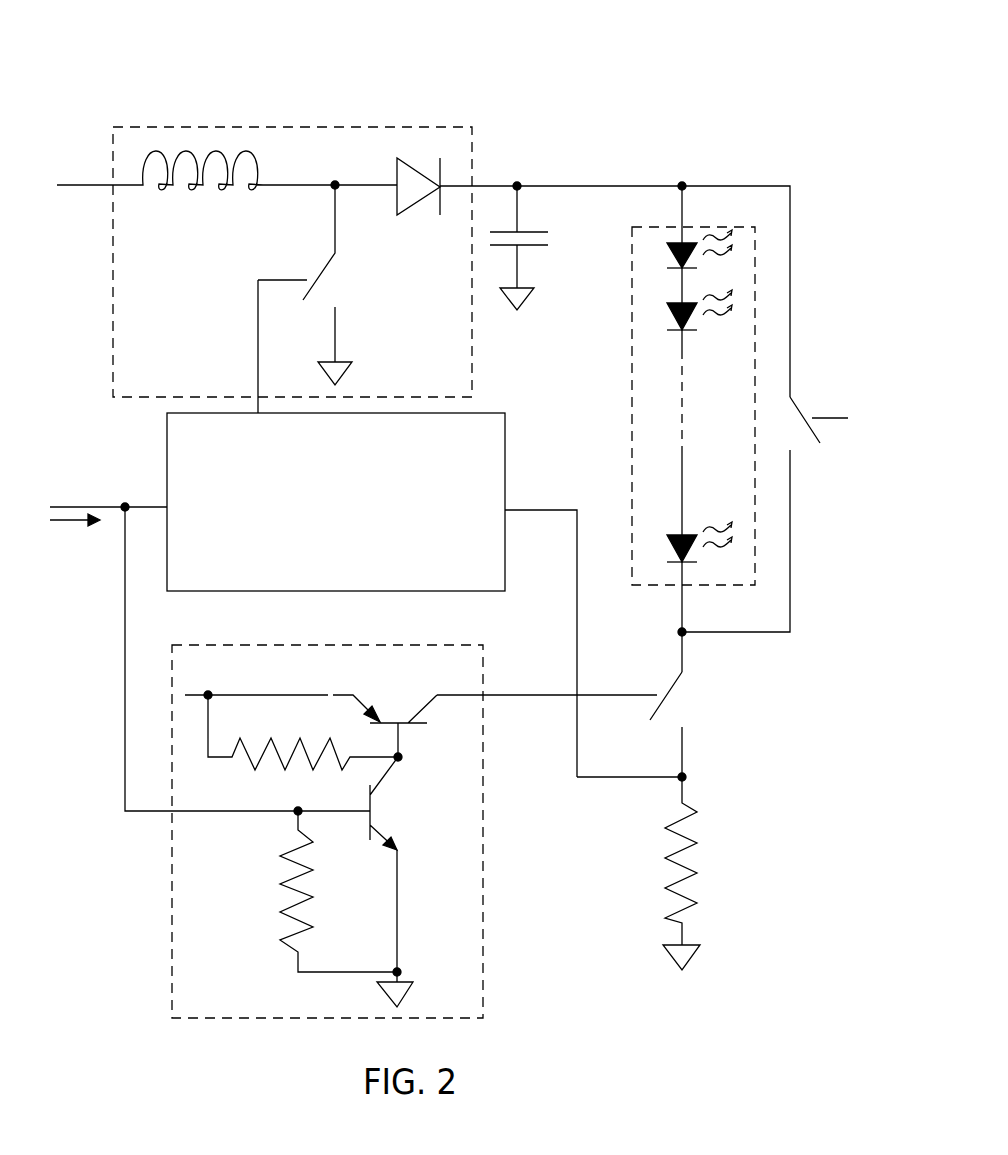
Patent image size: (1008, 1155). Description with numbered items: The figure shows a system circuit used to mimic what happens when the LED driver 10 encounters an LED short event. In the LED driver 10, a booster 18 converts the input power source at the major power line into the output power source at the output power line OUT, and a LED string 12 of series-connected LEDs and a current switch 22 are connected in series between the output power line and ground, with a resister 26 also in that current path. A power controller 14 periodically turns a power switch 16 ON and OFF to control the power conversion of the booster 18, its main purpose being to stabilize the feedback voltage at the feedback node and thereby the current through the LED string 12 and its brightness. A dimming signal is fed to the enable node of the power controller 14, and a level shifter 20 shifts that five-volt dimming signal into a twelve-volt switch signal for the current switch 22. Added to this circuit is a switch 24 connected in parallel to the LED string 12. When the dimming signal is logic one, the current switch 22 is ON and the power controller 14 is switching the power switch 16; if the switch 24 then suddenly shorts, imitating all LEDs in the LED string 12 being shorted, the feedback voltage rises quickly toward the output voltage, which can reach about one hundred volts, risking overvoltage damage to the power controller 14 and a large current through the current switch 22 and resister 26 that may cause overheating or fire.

The LED driver 10 is at (321, 90).
The LED string 12 is at (632, 320).
The power controller 14 is at (336, 508).
The power switch 16 is at (337, 277).
The booster 18 is at (417, 127).
The level shifter 20 is at (483, 833).
The current switch 22 is at (688, 700).
The switch 24 is at (803, 397).
The resister 26 is at (665, 855).